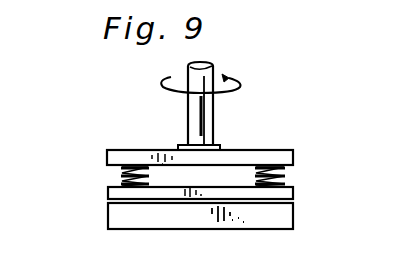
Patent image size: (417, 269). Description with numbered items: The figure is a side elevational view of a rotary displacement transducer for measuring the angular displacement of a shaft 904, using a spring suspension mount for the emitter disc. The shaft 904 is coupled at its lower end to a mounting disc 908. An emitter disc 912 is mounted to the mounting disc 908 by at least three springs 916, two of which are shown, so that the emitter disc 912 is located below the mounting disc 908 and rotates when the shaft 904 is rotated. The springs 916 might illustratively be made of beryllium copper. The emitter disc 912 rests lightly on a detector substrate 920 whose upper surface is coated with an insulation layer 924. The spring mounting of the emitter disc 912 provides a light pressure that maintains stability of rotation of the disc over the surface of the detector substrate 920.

The shaft 904 is at (213, 117).
The mounting disc 908 is at (293, 157).
The emitter disc 912 is at (293, 196).
The springs 916 is at (257, 170).
The detector substrate 920 is at (280, 218).
The insulation layer 924 is at (108, 207).